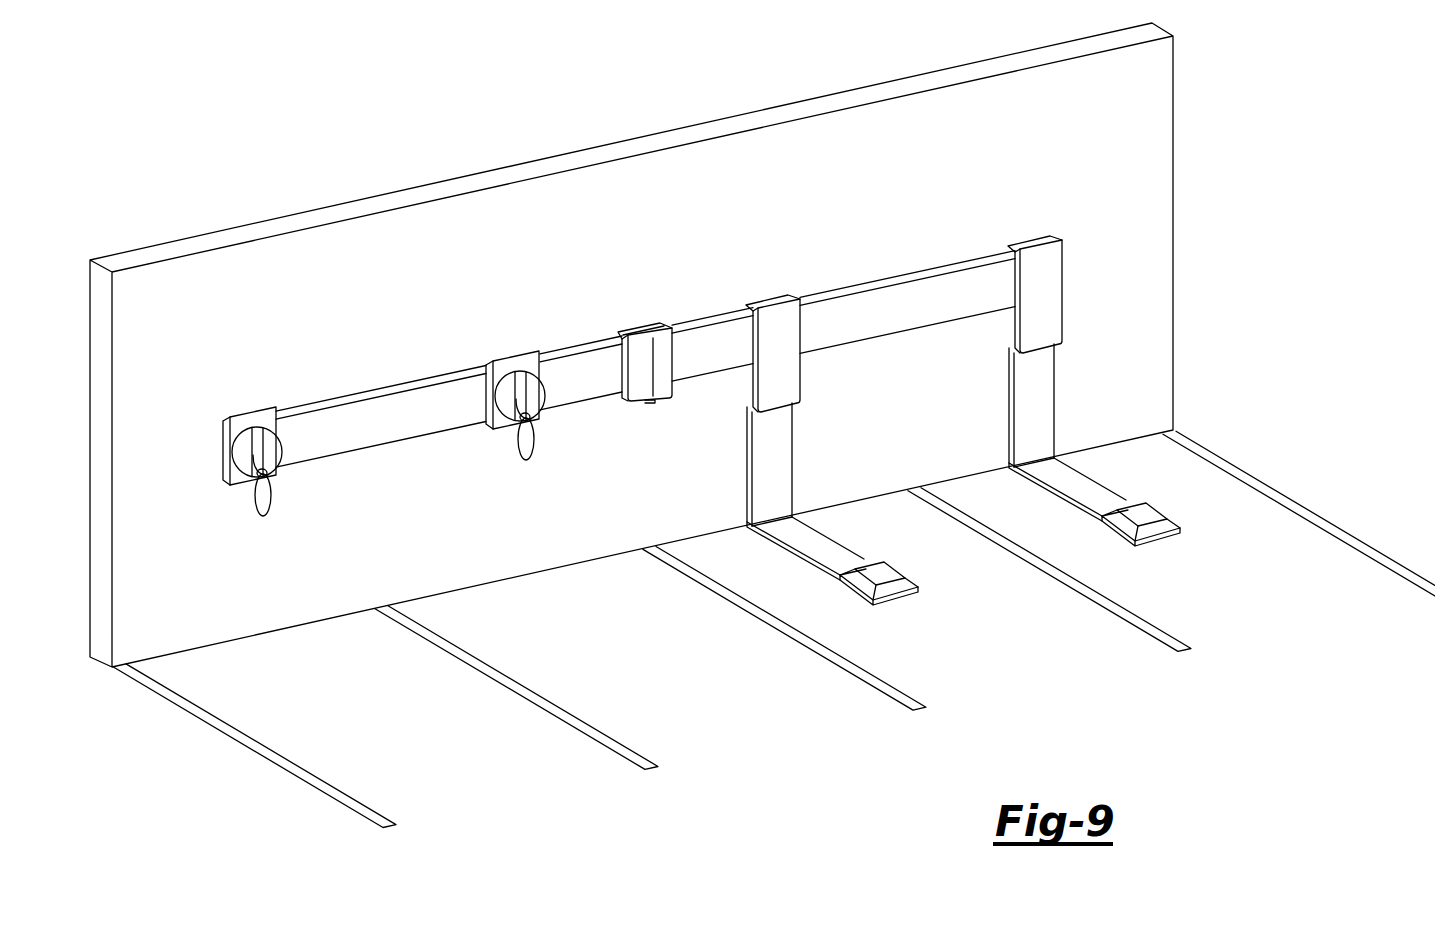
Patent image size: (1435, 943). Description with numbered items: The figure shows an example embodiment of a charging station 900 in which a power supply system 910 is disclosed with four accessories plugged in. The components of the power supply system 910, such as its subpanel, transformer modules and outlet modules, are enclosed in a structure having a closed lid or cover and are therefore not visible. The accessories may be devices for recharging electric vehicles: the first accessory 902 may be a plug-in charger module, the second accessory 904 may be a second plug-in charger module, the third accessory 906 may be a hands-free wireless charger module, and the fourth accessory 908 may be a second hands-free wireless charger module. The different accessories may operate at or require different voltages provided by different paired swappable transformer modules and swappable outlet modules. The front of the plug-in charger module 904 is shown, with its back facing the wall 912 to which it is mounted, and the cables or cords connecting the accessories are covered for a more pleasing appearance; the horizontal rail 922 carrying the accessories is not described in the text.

The charging station 900 is at (181, 102).
The first accessory 902 is at (251, 417).
The second accessory 904 is at (512, 362).
The third accessory 906 is at (878, 580).
The fourth accessory 908 is at (1142, 518).
The power supply system 910 is at (643, 330).
The wall 912 is at (635, 234).
The horizontal rail 922 is at (906, 306).